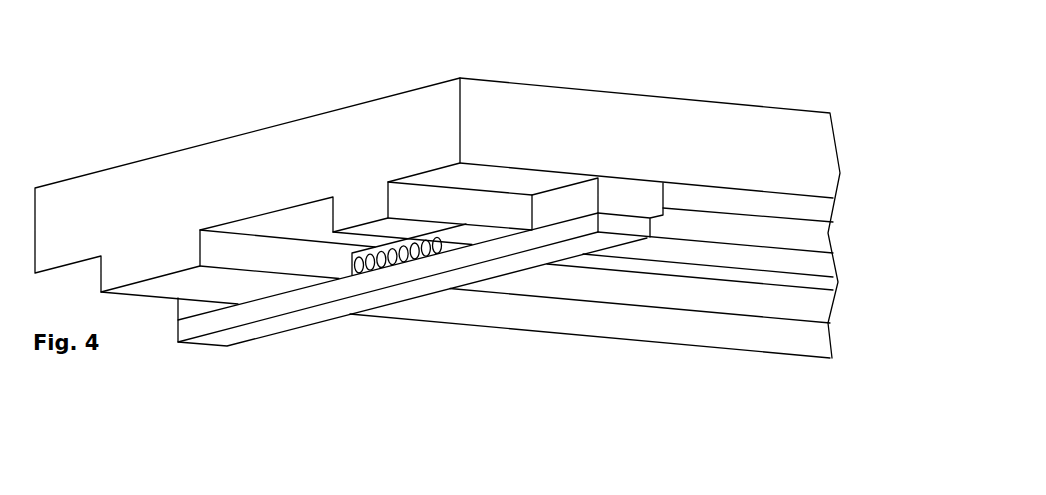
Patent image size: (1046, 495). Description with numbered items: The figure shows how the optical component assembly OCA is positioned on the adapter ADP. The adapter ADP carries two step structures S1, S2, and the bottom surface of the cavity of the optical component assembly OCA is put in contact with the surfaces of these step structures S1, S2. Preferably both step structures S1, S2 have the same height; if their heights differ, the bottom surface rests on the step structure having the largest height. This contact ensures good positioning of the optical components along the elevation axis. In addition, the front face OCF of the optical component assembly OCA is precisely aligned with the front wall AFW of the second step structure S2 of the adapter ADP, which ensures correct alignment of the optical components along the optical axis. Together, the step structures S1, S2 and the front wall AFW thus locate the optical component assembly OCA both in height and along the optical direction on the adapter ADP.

The adapter ADP is at (657, 133).
The first step structure S1 is at (752, 232).
The second step structure S2 is at (623, 197).
The optical component assembly OCA is at (290, 318).
The front face of the optical component assembly OCF is at (228, 323).
The front wall of the second step structure AFW is at (188, 316).